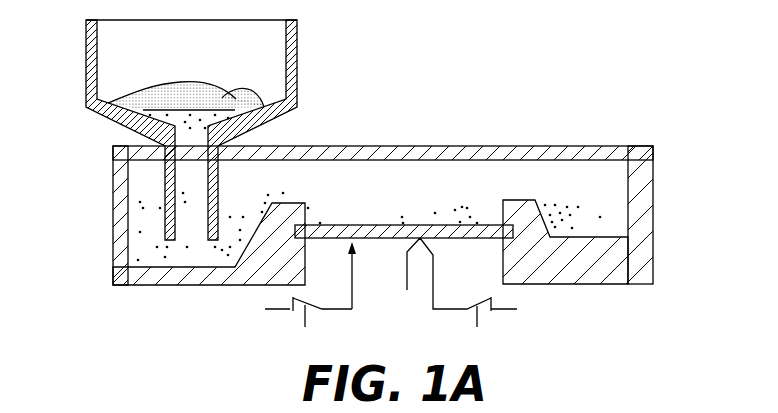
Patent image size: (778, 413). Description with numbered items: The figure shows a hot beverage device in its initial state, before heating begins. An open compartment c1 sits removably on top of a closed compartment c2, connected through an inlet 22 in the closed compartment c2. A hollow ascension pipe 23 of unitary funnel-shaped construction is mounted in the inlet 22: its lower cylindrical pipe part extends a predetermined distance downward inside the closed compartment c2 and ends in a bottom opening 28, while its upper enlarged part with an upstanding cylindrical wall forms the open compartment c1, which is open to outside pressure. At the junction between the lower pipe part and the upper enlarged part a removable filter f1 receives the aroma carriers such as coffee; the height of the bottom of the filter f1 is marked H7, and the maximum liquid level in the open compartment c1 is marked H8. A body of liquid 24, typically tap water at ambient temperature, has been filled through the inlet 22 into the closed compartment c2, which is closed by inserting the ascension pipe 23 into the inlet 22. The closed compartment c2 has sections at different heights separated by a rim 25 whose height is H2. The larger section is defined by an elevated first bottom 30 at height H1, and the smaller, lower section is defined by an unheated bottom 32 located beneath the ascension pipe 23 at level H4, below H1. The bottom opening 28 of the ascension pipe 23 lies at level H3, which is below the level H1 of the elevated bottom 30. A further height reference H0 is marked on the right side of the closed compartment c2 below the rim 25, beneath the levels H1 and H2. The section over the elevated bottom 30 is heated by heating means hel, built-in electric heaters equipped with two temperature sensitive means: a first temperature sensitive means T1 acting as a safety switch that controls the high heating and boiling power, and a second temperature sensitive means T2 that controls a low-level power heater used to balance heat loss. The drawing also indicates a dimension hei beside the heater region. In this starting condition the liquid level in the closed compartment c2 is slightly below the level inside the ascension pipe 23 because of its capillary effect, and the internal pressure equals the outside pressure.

The open compartment c1 is at (301, 35).
The closed compartment c2 is at (318, 144).
The filter f1 is at (230, 88).
The maximum liquid level in open container c1 H8 is at (97, 40).
The height of the bottom of filter f1 H7 is at (88, 109).
The inlet 22 is at (163, 143).
The ascension pipe 23 is at (185, 169).
The liquid 24 is at (185, 221).
The liquid level at lower orifice of ascension pipe H3 is at (205, 241).
The height of the bottom of closed compartment in the ascension pipe area H4 is at (128, 267).
The unheated bottom 32 is at (192, 262).
The bottom opening 28 is at (200, 243).
The elevated first bottom 30 is at (447, 225).
The rim 25 is at (523, 200).
The height of rim H2 is at (535, 202).
The liquid level of elevated bottom H1 is at (546, 226).
The cavity bottom height H0 is at (620, 237).
The second temperature sensitive means T2 is at (292, 323).
The first temperature sensitive means T1 is at (490, 318).
The heating means hel is at (407, 274).
The electrode height hei is at (352, 286).